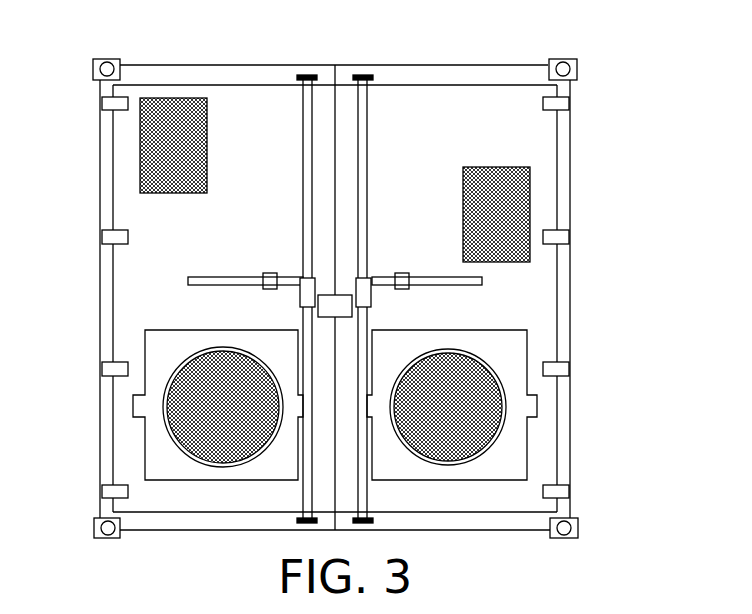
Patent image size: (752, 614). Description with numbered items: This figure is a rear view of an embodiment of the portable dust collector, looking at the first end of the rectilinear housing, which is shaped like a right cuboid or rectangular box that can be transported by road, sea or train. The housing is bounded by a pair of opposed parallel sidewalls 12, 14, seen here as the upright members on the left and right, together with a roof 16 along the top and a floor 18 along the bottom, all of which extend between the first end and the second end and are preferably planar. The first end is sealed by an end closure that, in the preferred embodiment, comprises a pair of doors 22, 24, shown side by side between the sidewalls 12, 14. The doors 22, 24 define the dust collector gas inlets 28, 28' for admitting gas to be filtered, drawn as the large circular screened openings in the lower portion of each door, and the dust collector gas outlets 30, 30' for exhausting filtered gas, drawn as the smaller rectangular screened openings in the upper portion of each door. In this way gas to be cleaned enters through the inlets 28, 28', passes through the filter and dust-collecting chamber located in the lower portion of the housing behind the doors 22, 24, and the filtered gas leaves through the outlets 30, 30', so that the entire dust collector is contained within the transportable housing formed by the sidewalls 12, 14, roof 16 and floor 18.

The sidewall 12 is at (105, 287).
The sidewall 14 is at (568, 278).
The roof 16 is at (198, 72).
The floor 18 is at (428, 526).
The door 22 is at (218, 443).
The door 24 is at (452, 443).
The dust collector gas inlet 28 is at (220, 382).
The dust collector gas inlet 28' is at (451, 381).
The dust collector gas outlet 30 is at (208, 153).
The dust collector gas outlet 30' is at (462, 210).